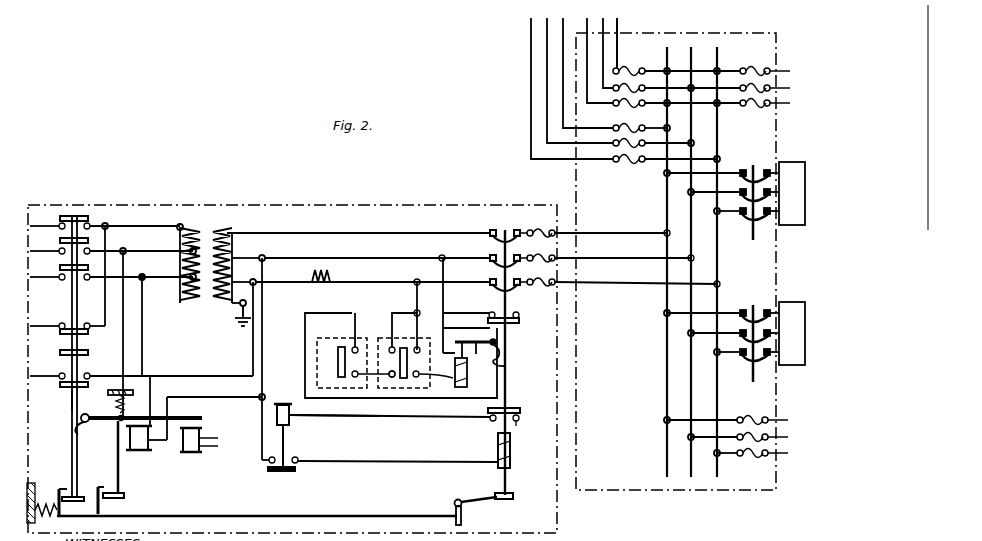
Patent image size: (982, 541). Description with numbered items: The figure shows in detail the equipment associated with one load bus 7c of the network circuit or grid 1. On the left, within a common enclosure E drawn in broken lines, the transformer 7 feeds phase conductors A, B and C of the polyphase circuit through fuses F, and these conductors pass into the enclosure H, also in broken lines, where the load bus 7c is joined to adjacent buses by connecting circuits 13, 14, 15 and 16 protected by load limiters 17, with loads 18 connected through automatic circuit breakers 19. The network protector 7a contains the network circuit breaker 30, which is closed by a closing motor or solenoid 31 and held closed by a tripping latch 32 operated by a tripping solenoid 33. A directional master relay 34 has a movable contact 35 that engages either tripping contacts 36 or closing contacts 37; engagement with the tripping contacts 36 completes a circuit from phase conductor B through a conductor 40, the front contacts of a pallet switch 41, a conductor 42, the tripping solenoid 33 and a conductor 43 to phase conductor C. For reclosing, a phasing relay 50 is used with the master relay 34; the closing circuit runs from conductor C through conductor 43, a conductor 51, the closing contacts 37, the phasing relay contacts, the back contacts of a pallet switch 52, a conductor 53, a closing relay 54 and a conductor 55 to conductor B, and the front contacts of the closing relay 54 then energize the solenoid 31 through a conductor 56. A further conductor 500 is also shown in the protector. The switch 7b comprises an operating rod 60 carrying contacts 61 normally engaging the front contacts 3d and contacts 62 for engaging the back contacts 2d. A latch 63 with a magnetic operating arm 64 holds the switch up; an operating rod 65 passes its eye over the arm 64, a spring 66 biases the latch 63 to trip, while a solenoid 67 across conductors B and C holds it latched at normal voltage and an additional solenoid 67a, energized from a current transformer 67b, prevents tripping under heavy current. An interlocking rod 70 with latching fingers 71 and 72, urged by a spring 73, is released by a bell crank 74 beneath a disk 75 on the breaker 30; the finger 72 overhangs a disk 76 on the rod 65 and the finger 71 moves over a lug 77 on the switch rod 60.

The network circuit or grid 1 is at (764, 278).
The back contacts 2d is at (58, 217).
The front contacts 3d is at (62, 324).
The transformer 7 is at (214, 203).
The network protector 7a is at (403, 499).
The switch 7b is at (72, 428).
The load bus 7c is at (660, 382).
The connecting circuit 13 is at (530, 65).
The connecting circuit 14 is at (619, 54).
The connecting circuit 15 is at (778, 422).
The connecting circuit 16 is at (780, 73).
The load limiters 17 is at (752, 468).
The loads 18 is at (794, 226).
The automatic circuit breaker 19 is at (758, 170).
The network circuit breaker 30 is at (540, 386).
The closing motor or solenoid 31 is at (512, 455).
The tripping latch 32 is at (468, 367).
The tripping solenoid 33 is at (468, 385).
The directional master relay 34 is at (378, 337).
The movable contact 35 is at (403, 380).
The tripping contacts 36 is at (451, 381).
The closing contacts 37 is at (390, 377).
The conductor 40 is at (444, 300).
The pallet switch 41 is at (514, 316).
The conductor 42 is at (519, 320).
The conductor 43 is at (419, 313).
The phasing relay 50 is at (318, 336).
The conductor 51 is at (396, 313).
The pallet switch 52 is at (519, 421).
The conductor 53 is at (390, 420).
The closing relay 54 is at (290, 428).
The conductor 55 is at (265, 303).
The conductor 56 is at (418, 461).
The operating rod 60 is at (70, 398).
The contacts 61 is at (80, 328).
The contacts 62 is at (82, 216).
The latch 63 is at (91, 425).
The operating arm 64 is at (124, 417).
The operating rod 65 is at (121, 477).
The spring 66 is at (107, 401).
The solenoid 67 is at (145, 450).
The additional solenoid 67a is at (193, 453).
The current transformer 67b is at (322, 290).
The interlocking rod 70 is at (275, 511).
The latching finger 71 is at (58, 490).
The latching finger 72 is at (100, 486).
The spring 73 is at (45, 518).
The bell crank 74 is at (470, 505).
The disk 75 is at (514, 497).
The disk 76 is at (125, 498).
The lug 77 is at (70, 486).
The conductor 500 is at (390, 408).
The line conductor A is at (336, 226).
The phase conductor B is at (336, 253).
The phase conductor C is at (352, 278).
The common enclosure E is at (362, 204).
The fuses F is at (548, 230).
The cabinet or enclosure H is at (673, 492).